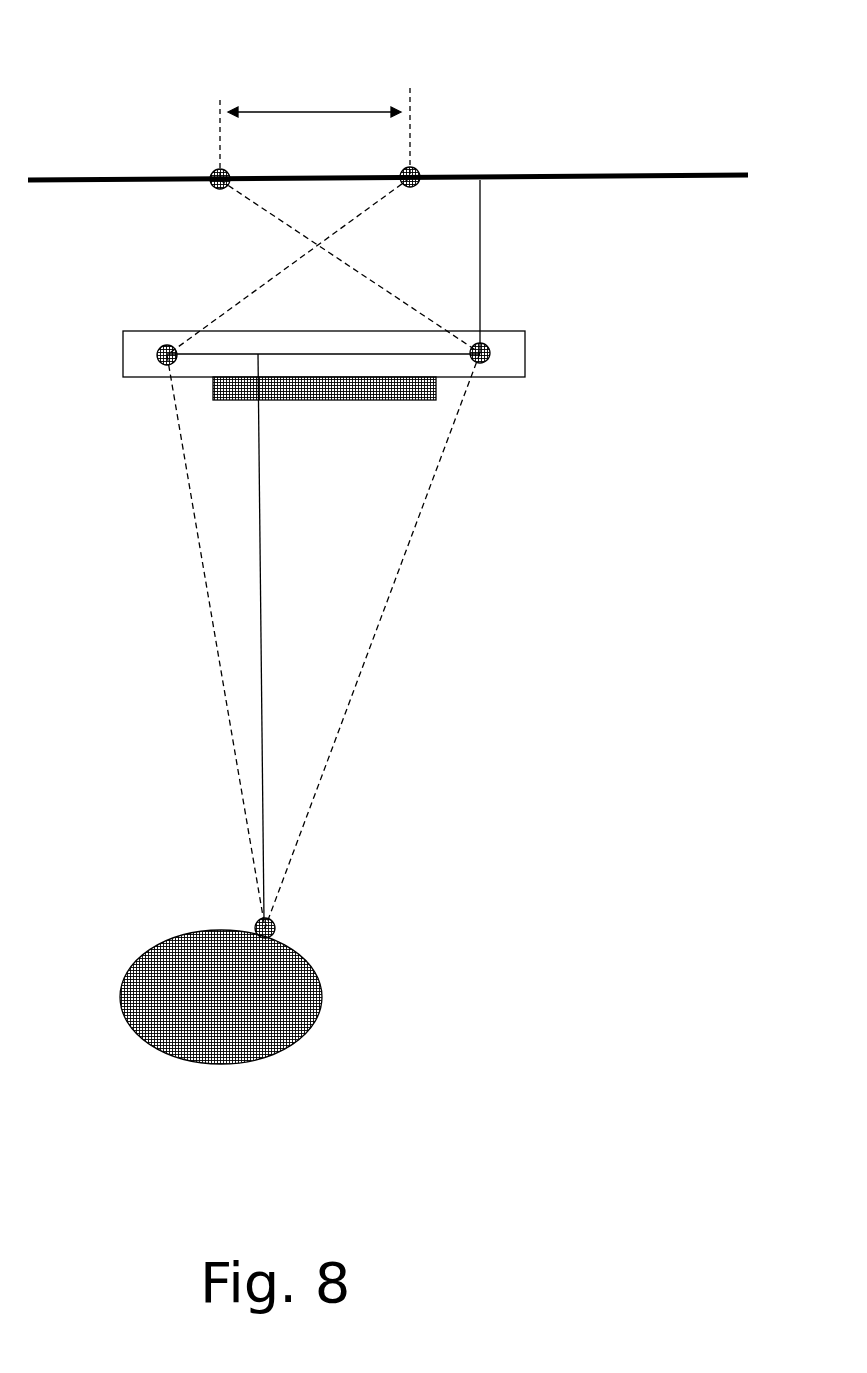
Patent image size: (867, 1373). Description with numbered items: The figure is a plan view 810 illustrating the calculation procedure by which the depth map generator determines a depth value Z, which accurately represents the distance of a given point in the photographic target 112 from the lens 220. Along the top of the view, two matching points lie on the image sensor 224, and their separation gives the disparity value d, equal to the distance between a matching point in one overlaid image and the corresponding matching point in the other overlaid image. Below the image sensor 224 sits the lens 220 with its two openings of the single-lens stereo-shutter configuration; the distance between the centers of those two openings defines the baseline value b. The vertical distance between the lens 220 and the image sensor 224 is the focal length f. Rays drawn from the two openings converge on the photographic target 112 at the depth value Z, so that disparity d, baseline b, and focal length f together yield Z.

The image sensor 224 is at (680, 172).
The lens 220 is at (525, 340).
The photographic target 112 is at (322, 1005).
The plan view 810 is at (608, 1250).
The disparity value d is at (320, 112).
The focal length f is at (480, 245).
The baseline value b is at (343, 354).
The depth value Z is at (262, 623).